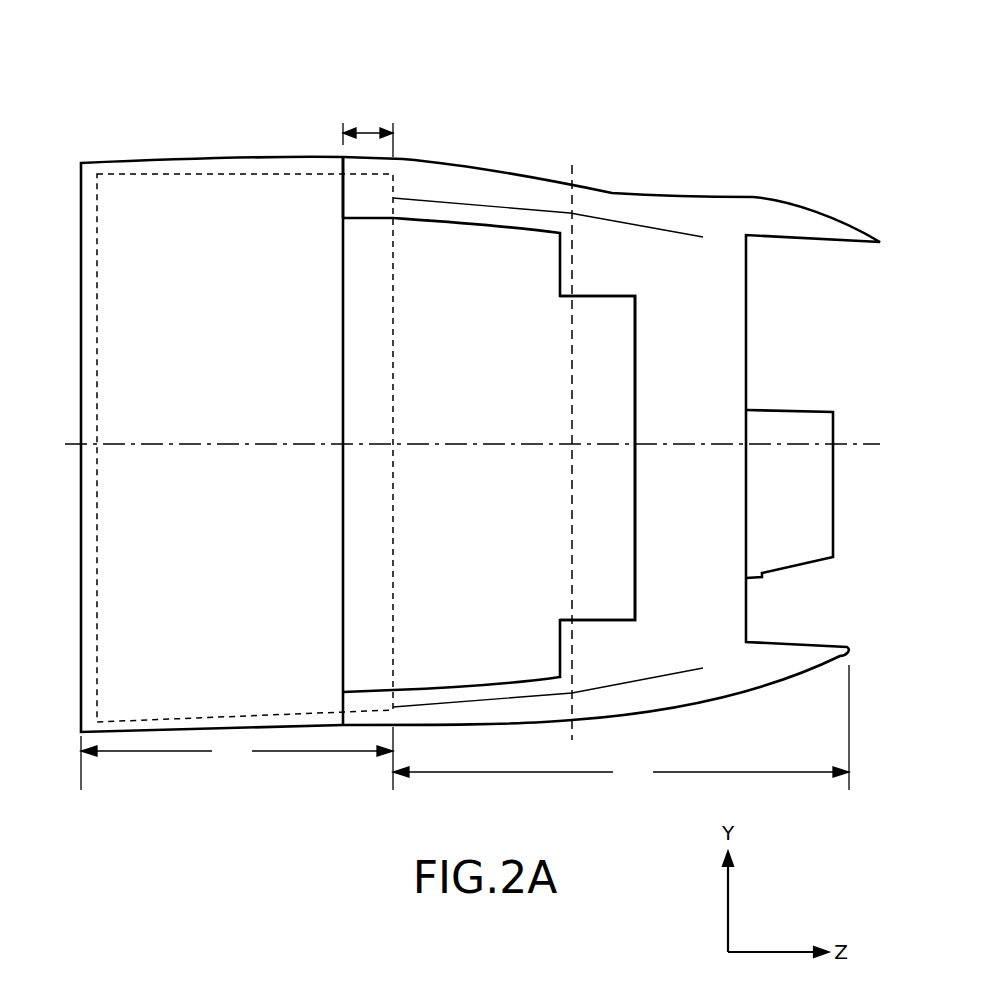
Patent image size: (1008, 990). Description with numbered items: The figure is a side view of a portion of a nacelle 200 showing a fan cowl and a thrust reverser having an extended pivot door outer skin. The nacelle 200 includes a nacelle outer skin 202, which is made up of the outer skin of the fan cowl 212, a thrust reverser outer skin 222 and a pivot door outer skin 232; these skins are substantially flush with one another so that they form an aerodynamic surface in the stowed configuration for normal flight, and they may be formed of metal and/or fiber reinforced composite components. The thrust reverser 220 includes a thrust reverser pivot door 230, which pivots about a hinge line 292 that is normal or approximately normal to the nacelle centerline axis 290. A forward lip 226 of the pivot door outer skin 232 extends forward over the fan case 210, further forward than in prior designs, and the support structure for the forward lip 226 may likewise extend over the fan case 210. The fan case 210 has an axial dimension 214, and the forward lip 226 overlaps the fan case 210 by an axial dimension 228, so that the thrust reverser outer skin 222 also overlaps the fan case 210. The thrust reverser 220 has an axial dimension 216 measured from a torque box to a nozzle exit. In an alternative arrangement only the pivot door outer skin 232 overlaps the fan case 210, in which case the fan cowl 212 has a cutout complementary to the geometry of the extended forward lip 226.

The nacelle 200 is at (686, 70).
The nacelle outer skin 202 is at (660, 240).
The fan case 210 is at (232, 175).
The fan cowl 212 is at (148, 160).
The axial dimension 214 is at (237, 758).
The axial dimension 216 is at (621, 727).
The thrust reverser 220 is at (460, 172).
The thrust reverser outer skin 222 is at (587, 195).
The forward lip 226 is at (343, 583).
The axial dimension 228 is at (368, 133).
The thrust reverser pivot door 230 is at (447, 672).
The pivot door outer skin 232 is at (437, 416).
The nacelle centerline axis 290 is at (63, 444).
The hinge line 292 is at (572, 728).